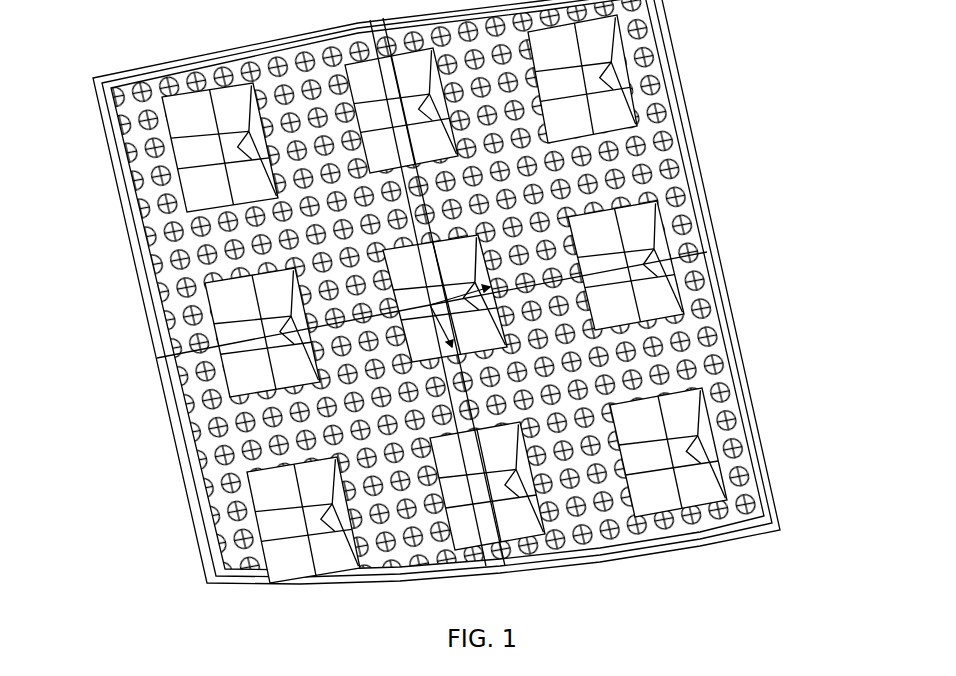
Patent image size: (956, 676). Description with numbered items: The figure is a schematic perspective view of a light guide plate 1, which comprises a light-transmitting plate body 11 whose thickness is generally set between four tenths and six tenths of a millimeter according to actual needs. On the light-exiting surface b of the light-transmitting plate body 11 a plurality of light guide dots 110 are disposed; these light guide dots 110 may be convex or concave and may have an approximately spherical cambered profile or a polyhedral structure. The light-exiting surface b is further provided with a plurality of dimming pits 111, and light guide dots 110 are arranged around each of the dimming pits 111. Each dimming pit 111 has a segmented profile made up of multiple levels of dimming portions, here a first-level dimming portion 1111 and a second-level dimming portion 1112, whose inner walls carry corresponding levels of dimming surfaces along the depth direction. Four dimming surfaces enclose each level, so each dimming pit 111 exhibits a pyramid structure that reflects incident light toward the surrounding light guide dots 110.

The light guide plate 1 is at (472, 292).
The light-transmitting plate body 11 is at (407, 292).
The light guide dots 110 is at (657, 62).
The light-exiting surface b is at (656, 163).
The dimming pits 111 is at (546, 299).
The first-level dimming portion 1111 is at (672, 418).
The second-level dimming portion 1112 is at (695, 424).